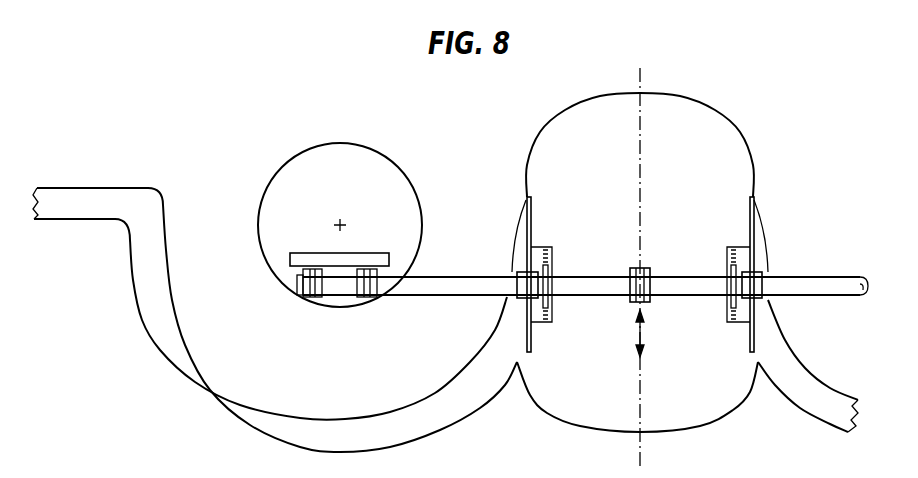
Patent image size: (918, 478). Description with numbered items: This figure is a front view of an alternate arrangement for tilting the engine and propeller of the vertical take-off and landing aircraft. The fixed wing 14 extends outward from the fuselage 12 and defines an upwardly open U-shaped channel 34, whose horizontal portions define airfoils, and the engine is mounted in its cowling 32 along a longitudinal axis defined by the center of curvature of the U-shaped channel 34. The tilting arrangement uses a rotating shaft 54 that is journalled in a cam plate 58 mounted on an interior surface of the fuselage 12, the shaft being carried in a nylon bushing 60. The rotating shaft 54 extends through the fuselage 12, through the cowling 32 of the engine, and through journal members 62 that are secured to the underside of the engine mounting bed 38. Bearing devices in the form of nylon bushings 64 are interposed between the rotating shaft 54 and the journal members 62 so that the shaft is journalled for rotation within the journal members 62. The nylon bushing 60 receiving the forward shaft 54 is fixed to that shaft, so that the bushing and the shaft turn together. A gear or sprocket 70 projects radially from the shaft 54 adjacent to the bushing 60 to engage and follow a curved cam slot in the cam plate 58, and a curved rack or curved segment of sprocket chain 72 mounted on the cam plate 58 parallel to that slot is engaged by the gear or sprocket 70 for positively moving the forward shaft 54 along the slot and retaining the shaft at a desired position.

The fuselage 12 is at (572, 105).
The fixed wing 14 is at (108, 186).
The cowling 32 is at (316, 142).
The U-shaped channel 34 is at (214, 378).
The engine mounting bed 38 is at (318, 253).
The forward rotating shaft 54 is at (437, 290).
The cam plate 58 is at (532, 220).
The nylon bushing 60 is at (516, 275).
The journal member 62 is at (313, 297).
The nylon bushing 64 is at (297, 295).
The gear or sprocket 70 is at (553, 300).
The rack or sprocket chain segment 72 is at (545, 250).